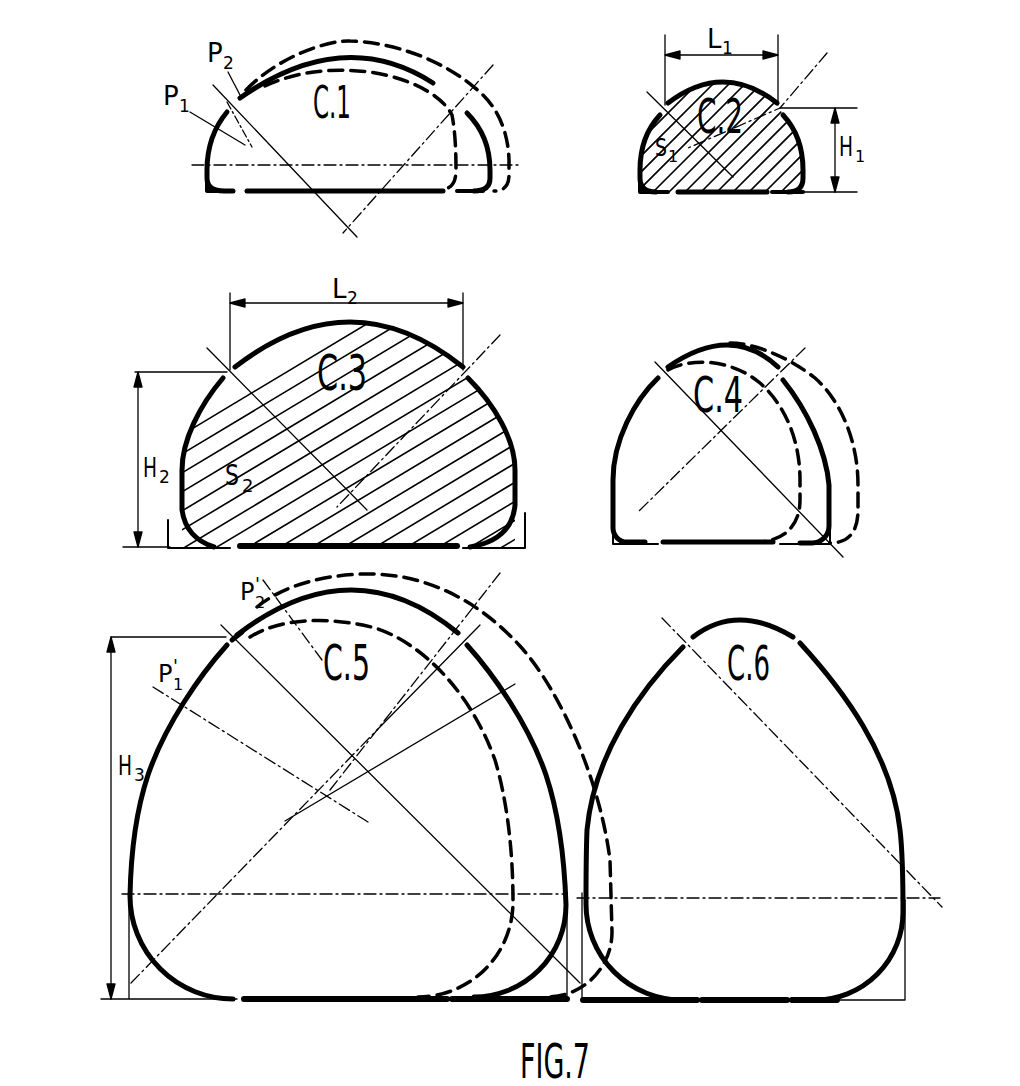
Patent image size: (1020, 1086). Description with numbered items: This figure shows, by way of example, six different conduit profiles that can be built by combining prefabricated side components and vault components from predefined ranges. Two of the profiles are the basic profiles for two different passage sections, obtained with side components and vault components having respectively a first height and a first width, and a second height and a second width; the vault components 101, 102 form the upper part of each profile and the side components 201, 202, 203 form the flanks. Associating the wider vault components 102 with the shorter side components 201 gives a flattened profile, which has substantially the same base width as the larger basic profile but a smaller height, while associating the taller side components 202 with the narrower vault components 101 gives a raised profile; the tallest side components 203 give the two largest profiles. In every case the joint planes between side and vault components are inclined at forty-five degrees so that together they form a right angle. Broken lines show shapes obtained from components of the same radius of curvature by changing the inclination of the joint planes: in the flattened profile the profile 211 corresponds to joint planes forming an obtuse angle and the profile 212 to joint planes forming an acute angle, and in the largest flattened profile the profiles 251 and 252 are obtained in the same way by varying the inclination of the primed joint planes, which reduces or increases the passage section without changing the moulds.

The convex top arc of tooth profile (C.2, C.4, C.6) 101 is at (693, 90).
The convex top arc of tooth profile (C.1, C.3, C.5) 102 is at (432, 70).
The lateral flank of profile (C.1, C.2) 201 is at (498, 137).
The lateral flank of profile (C.3, C.4) 202 is at (508, 442).
The lateral flank of profile (C.5, C.6) 203 is at (523, 717).
The profile 211 is at (311, 70).
The profile 212 is at (364, 45).
The profile 251 is at (247, 627).
The profile 252 is at (523, 648).